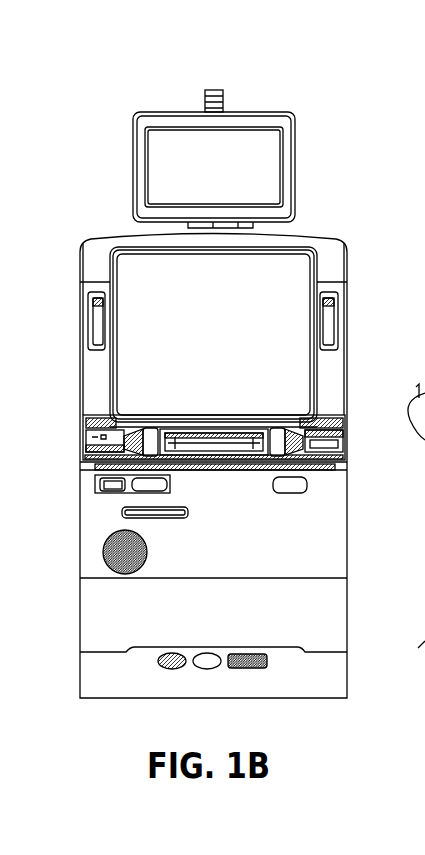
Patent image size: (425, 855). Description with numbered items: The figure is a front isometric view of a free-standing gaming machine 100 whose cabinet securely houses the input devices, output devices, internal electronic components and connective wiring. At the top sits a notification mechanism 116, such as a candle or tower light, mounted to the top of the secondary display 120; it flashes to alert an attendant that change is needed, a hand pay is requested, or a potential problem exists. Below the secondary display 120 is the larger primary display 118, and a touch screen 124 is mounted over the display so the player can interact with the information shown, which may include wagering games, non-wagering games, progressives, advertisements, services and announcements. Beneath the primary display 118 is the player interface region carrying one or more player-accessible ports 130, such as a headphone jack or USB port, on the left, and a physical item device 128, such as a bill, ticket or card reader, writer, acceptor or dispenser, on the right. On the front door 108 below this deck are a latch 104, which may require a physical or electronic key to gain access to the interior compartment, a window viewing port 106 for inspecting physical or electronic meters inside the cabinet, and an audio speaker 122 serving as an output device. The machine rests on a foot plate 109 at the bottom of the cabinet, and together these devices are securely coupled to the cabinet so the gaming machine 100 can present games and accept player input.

The gaming machine 100 is at (70, 182).
The notification mechanism 116 is at (200, 100).
The secondary display 120 is at (240, 192).
The primary display 118 is at (158, 318).
The touch screen 124 is at (207, 388).
The player-accessible port 130 is at (92, 439).
The physical item device 128 is at (322, 445).
The latch 104 is at (92, 485).
The window viewing port 106 is at (188, 512).
The audio speaker 122 is at (102, 552).
The front door 108 is at (317, 525).
The foot plate 109 is at (88, 675).